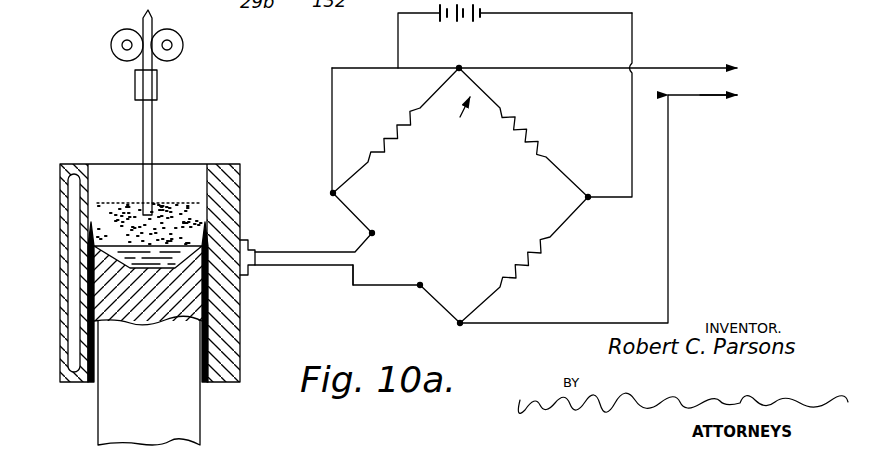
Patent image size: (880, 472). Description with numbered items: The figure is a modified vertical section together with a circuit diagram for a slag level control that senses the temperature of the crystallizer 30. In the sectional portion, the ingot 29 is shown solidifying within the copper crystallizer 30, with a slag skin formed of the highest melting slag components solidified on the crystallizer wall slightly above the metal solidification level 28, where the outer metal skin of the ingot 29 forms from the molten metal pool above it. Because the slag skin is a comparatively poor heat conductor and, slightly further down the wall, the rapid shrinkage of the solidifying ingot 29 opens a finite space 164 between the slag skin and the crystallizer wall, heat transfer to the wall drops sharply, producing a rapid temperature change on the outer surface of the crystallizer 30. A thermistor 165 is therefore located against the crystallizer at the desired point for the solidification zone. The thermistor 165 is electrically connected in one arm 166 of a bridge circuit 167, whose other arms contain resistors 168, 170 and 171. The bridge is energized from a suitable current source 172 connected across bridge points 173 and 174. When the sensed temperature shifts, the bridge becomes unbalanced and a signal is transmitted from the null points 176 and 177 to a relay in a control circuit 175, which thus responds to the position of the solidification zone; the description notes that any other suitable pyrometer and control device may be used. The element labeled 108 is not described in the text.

The metal solidification level 28 is at (92, 256).
The ingot 29 is at (185, 422).
The crystallizer 30 is at (233, 302).
The feed rod / electrode 108 is at (168, 212).
The finite space 164 is at (82, 304).
The thermistor 165 is at (252, 248).
The arm of bridge circuit 166 is at (413, 255).
The bridge circuit 167 is at (453, 120).
The resistor 168 is at (530, 243).
The resistor 170 is at (553, 123).
The resistor 171 is at (403, 115).
The current source 172 is at (473, 18).
The bridge point 173 is at (337, 193).
The bridge point 174 is at (590, 200).
The control circuit 175 is at (727, 82).
The null point 176 is at (459, 66).
The null point 177 is at (460, 327).